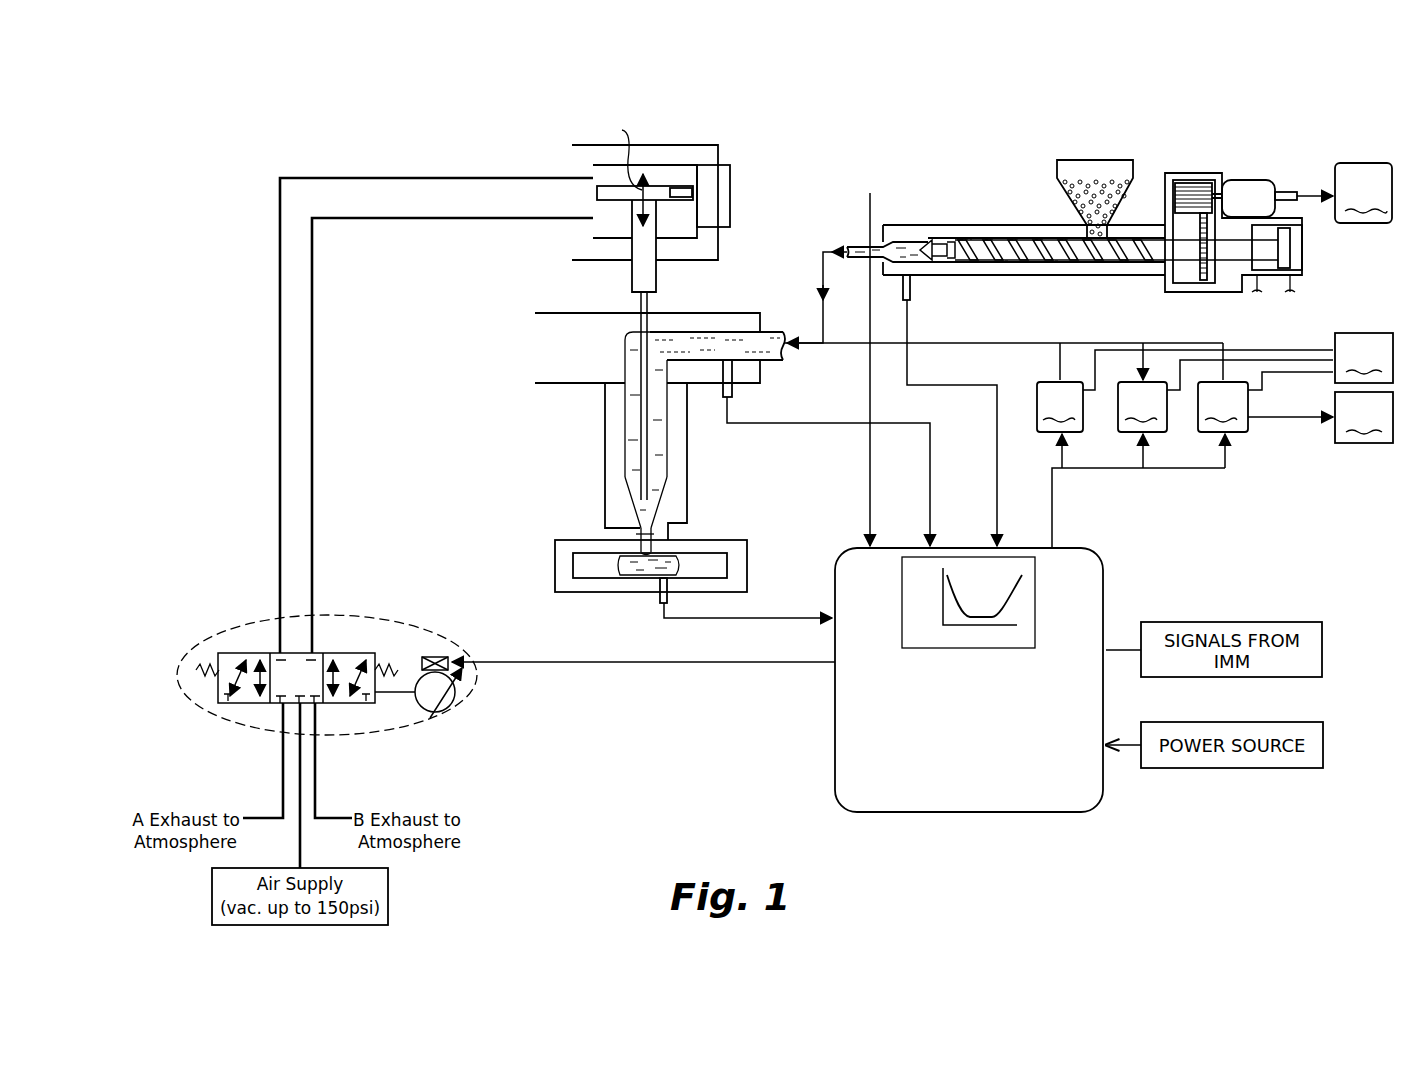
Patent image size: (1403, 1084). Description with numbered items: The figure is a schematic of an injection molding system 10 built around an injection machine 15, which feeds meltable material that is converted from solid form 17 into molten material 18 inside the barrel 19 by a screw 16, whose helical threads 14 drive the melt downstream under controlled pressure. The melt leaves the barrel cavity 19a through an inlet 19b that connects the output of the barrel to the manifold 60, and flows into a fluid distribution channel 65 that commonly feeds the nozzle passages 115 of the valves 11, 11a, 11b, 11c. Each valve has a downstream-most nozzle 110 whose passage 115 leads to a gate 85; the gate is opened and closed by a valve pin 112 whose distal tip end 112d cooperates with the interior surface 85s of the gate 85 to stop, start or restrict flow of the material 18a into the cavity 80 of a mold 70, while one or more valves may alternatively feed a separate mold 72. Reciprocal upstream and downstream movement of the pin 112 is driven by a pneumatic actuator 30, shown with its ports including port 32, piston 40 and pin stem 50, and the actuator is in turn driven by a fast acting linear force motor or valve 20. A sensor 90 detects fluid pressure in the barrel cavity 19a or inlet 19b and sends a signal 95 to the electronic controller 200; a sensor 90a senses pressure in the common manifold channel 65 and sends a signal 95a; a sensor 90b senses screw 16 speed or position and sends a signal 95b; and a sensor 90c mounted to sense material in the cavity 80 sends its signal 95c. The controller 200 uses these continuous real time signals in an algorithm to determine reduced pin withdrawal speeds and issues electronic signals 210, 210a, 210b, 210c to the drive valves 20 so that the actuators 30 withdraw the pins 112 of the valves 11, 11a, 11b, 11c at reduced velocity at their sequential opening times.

The system 10 is at (466, 122).
The valve 11 is at (788, 150).
The helical threads 14 is at (1088, 268).
The injection machine 15 is at (960, 188).
The screw 16 is at (1012, 240).
The solid form injection material 17 is at (1105, 175).
The molten injection material 18 is at (908, 240).
The material 18a is at (655, 553).
The barrel 19 is at (1026, 275).
The barrel cavity 19a is at (926, 245).
The inlet 19b is at (845, 252).
The fast acting linear force motor or valve 20 is at (218, 628).
The pneumatic actuator 30 is at (570, 160).
The actuator port 32 is at (731, 172).
The piston 40 is at (672, 188).
The valve pin 50 is at (650, 303).
The manifold 60 is at (722, 313).
The fluid distribution channel 65 is at (622, 330).
The mold 70 is at (745, 538).
The mold 72 is at (1364, 417).
The cavity 80 is at (722, 562).
The gate 85 is at (640, 556).
The interior surface of gate 85s is at (636, 534).
The sensor 90 is at (912, 288).
The sensor 90a is at (733, 392).
The sensor 90b is at (1290, 192).
The sensor 90c is at (661, 598).
The signal 95 is at (997, 444).
The signal 95a is at (930, 462).
The signal 95b is at (1316, 195).
The cavity sensor signal line 95c is at (772, 620).
The nozzle 110 is at (605, 446).
The valve pin 112 is at (645, 412).
The distal tip end 112d is at (642, 508).
The nozzle passage 115 is at (632, 475).
The electronic controller 200 is at (1100, 562).
The electronic signal 210 is at (748, 665).
The electronic signal 210a is at (1062, 455).
The electronic signal 210b is at (1143, 455).
The electronic signal 210c is at (1225, 455).
The valve 11a is at (1060, 407).
The valve 11b is at (1142, 407).
The valve 11c is at (1223, 407).